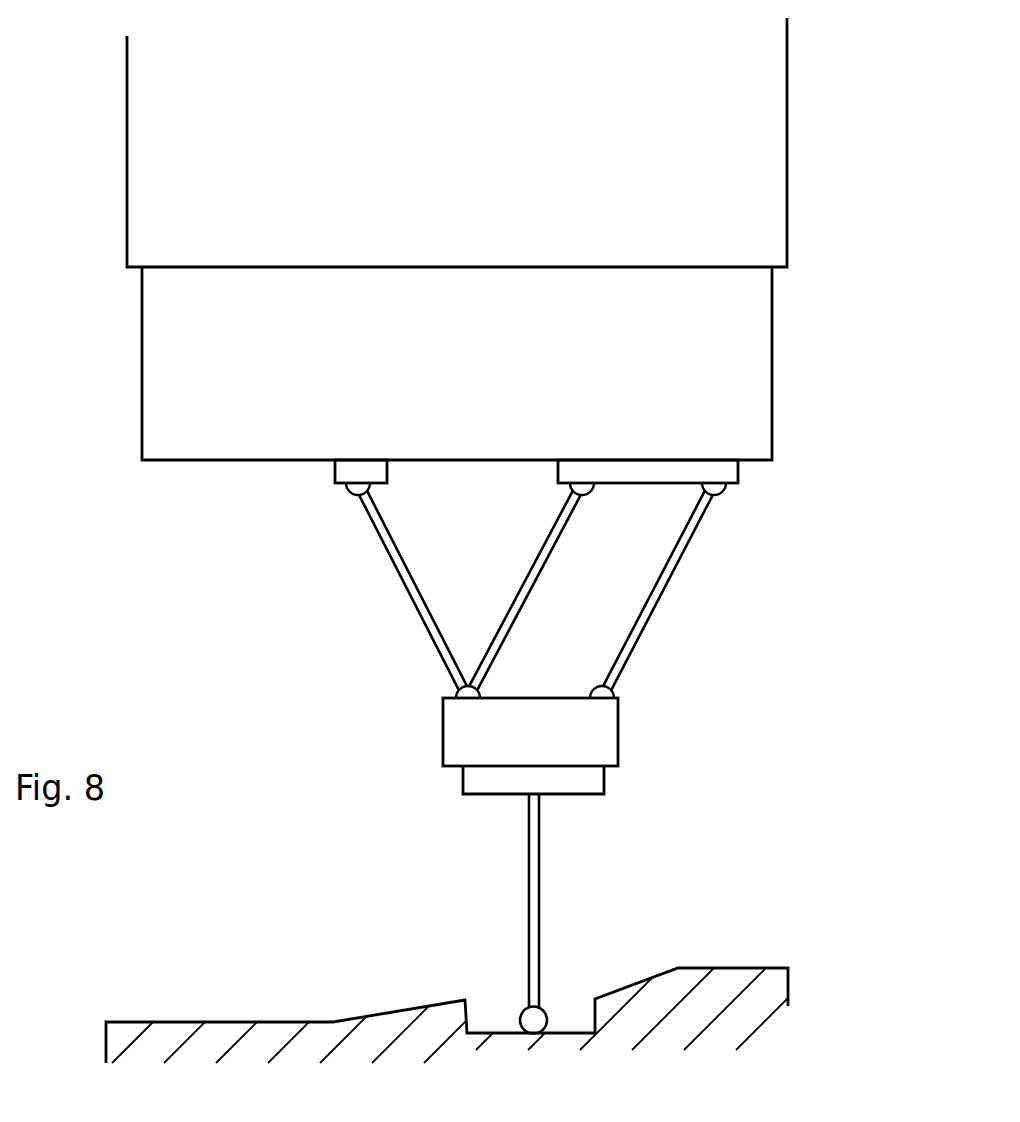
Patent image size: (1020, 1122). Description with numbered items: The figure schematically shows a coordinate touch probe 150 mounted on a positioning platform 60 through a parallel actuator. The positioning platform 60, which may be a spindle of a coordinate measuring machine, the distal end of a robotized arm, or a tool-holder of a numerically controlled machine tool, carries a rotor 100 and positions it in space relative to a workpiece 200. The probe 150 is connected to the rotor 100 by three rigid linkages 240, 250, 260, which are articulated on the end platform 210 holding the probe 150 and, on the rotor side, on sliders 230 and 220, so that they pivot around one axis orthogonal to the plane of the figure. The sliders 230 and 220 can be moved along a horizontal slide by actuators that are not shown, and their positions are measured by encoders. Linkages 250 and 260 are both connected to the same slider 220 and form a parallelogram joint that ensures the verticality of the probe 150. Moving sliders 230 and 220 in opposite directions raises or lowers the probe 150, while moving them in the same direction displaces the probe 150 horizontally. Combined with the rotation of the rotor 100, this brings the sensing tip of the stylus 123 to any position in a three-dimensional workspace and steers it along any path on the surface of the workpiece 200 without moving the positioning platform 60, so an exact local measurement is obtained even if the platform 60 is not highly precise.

The positioning platform 60 is at (754, 185).
The rotor 100 is at (735, 361).
The slider 220 is at (738, 467).
The slider 230 is at (343, 473).
The rigid linkage 240 is at (412, 585).
The rigid linkage 250 is at (555, 535).
The rigid linkage 260 is at (675, 568).
The end platform 210 is at (448, 733).
The contact probe 150 is at (604, 786).
The stylus 123 is at (530, 840).
The workpiece 200 is at (752, 982).